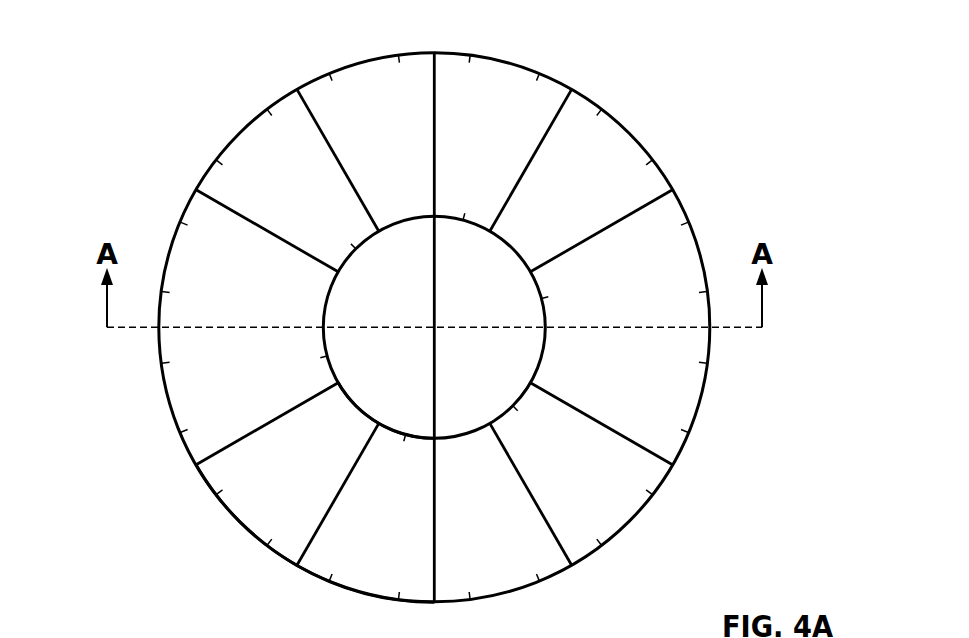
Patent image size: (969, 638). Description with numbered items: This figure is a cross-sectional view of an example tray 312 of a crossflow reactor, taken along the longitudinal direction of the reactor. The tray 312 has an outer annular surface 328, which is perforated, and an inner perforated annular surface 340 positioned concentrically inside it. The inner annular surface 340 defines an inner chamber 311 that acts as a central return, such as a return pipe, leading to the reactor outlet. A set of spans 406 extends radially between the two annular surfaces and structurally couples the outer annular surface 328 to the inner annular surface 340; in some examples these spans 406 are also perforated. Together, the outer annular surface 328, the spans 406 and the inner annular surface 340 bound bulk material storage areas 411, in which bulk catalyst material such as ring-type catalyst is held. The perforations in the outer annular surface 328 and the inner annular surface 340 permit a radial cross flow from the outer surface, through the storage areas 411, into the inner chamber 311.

The tray 312 is at (387, 307).
The outer annular surface 328 is at (185, 205).
The inner perforated annular surface 340 is at (323, 357).
The inner chamber 311 is at (410, 378).
The spans 406 is at (285, 410).
The bulk material storage areas 411 is at (350, 443).